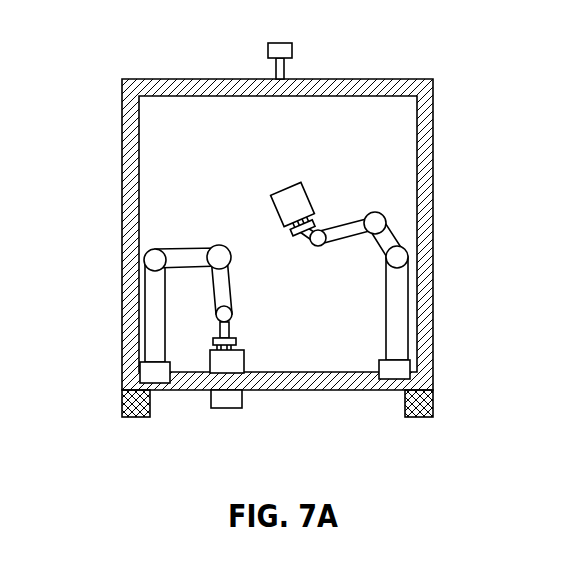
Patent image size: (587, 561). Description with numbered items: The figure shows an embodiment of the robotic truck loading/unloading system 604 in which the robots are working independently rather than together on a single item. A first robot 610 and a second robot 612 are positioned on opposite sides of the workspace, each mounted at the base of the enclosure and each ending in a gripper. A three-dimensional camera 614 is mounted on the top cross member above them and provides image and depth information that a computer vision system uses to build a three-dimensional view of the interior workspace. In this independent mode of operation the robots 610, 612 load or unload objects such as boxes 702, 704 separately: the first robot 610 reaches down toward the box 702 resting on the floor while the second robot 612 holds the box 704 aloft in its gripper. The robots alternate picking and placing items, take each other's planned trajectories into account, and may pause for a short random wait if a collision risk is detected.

The robotic truck loading/unloading system 604 is at (140, 58).
The 3D camera 614 is at (292, 50).
The first robot 610 is at (191, 256).
The second robot 612 is at (348, 242).
The box 702 is at (243, 365).
The box 704 is at (285, 183).